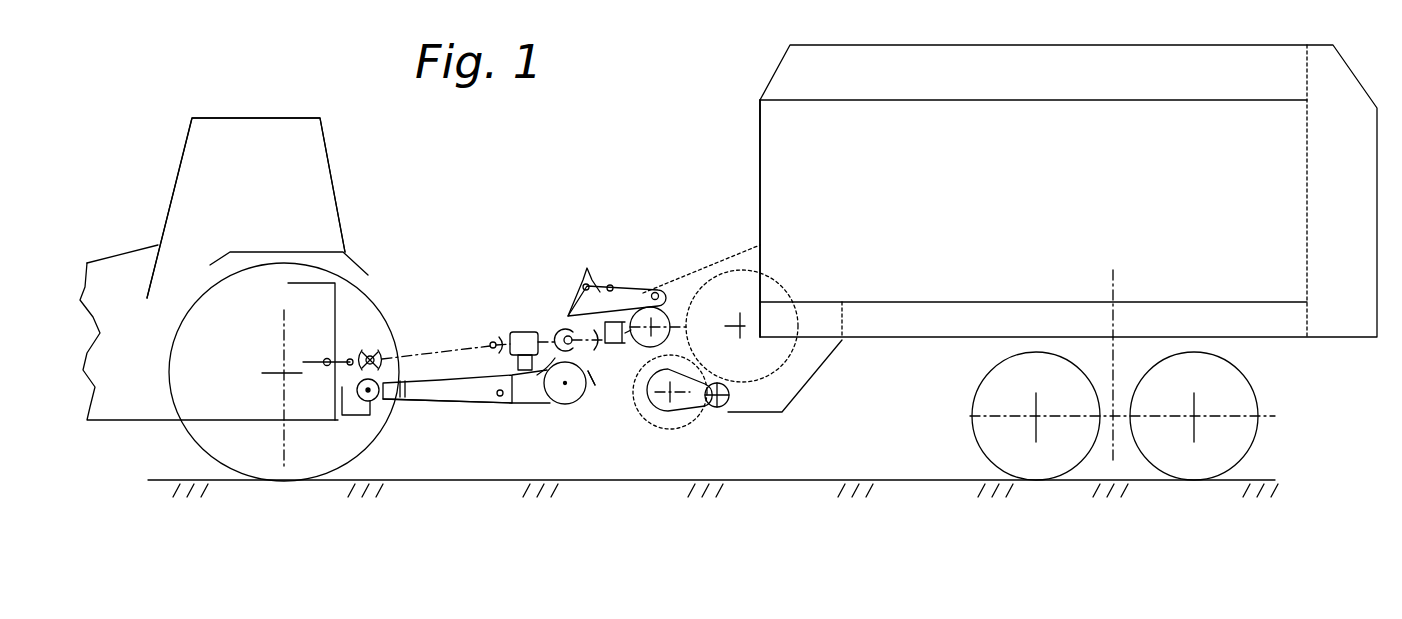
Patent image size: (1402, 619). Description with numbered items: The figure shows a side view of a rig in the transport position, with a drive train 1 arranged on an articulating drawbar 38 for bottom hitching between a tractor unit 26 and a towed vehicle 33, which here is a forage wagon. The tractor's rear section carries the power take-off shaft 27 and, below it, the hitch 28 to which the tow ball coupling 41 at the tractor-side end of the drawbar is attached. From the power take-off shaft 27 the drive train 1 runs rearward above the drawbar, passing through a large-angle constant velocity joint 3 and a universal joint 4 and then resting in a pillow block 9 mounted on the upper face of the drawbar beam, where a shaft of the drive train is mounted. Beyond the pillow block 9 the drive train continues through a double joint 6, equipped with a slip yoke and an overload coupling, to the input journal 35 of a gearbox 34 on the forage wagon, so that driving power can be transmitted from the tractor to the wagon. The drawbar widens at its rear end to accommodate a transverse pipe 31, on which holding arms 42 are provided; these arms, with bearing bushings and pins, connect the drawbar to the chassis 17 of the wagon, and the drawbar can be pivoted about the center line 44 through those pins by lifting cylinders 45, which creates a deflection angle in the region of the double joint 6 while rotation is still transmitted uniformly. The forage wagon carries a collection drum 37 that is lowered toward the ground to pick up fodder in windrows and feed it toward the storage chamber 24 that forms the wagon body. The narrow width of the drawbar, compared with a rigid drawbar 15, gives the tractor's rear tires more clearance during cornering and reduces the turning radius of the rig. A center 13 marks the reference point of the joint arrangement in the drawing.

The drive train 1 is at (431, 352).
The large-angle constant velocity joint 3 is at (366, 351).
The universal joint 4 is at (492, 341).
The double joint 6 is at (584, 491).
The pillow block 9 is at (524, 331).
The center 13 is at (590, 372).
The rigid drawbar 15 is at (501, 396).
The chassis 17 is at (883, 323).
The storage chamber 24 is at (1077, 233).
The tractor unit 26 is at (293, 208).
The power take-off shaft 27 is at (325, 366).
The hitch 28 is at (370, 392).
The transverse pipe 31 is at (666, 312).
The towed vehicle 33 is at (700, 183).
The gearbox 34 is at (622, 343).
The input journal 35 is at (618, 330).
The collection drum 37 is at (663, 405).
The articulating drawbar 38 is at (455, 411).
The tow ball coupling 41 is at (394, 500).
The holding arms 42 is at (577, 303).
The center line 44 is at (592, 374).
The lifting cylinder 45 is at (610, 285).